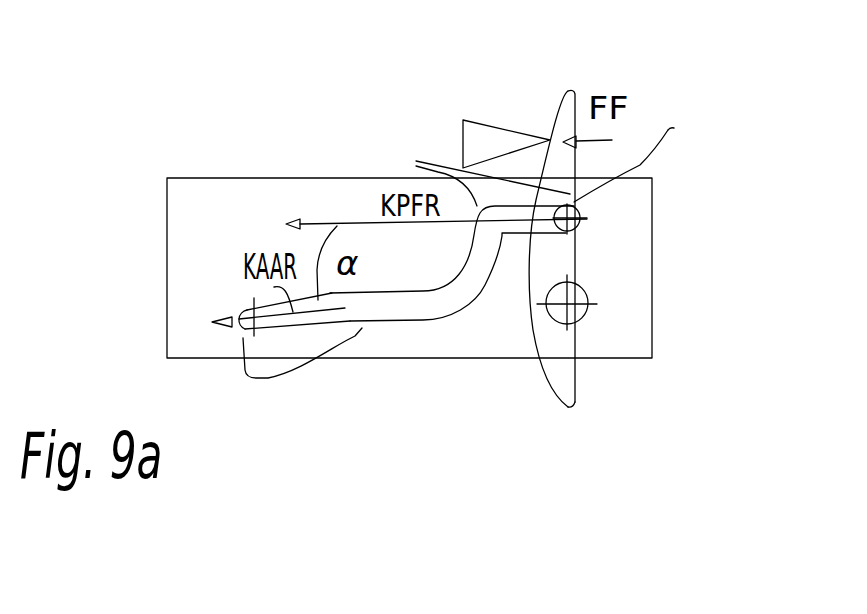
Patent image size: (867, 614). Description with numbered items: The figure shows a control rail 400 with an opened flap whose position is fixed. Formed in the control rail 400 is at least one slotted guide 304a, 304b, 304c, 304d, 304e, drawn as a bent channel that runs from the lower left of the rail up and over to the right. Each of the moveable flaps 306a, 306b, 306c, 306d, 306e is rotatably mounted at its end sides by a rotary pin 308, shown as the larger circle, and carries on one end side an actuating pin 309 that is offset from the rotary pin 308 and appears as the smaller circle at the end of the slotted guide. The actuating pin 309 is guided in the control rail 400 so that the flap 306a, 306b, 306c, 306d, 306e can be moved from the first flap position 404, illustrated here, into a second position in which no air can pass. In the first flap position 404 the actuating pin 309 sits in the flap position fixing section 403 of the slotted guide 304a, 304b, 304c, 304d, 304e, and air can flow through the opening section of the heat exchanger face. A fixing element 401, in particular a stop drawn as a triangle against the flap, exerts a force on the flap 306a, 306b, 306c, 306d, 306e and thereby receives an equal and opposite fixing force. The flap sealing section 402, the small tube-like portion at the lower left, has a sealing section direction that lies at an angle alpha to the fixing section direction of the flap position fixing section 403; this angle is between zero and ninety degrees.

The control rail 400 is at (190, 197).
The fixing element 401 is at (483, 140).
The flap sealing section 402 is at (284, 369).
The flap position fixing section 403 is at (460, 169).
The first flap position 404 is at (562, 108).
The actuating pin 309 is at (648, 138).
The rotary pin 308 is at (578, 297).
The flap 306a is at (690, 206).
The flap 306b is at (690, 206).
The flap 306c is at (690, 206).
The flap 306d is at (690, 206).
The flap 306e is at (550, 263).
The slotted guide 304a is at (432, 368).
The slotted guide 304b is at (432, 368).
The slotted guide 304c is at (432, 368).
The slotted guide 304d is at (432, 368).
The slotted guide 304e is at (385, 303).